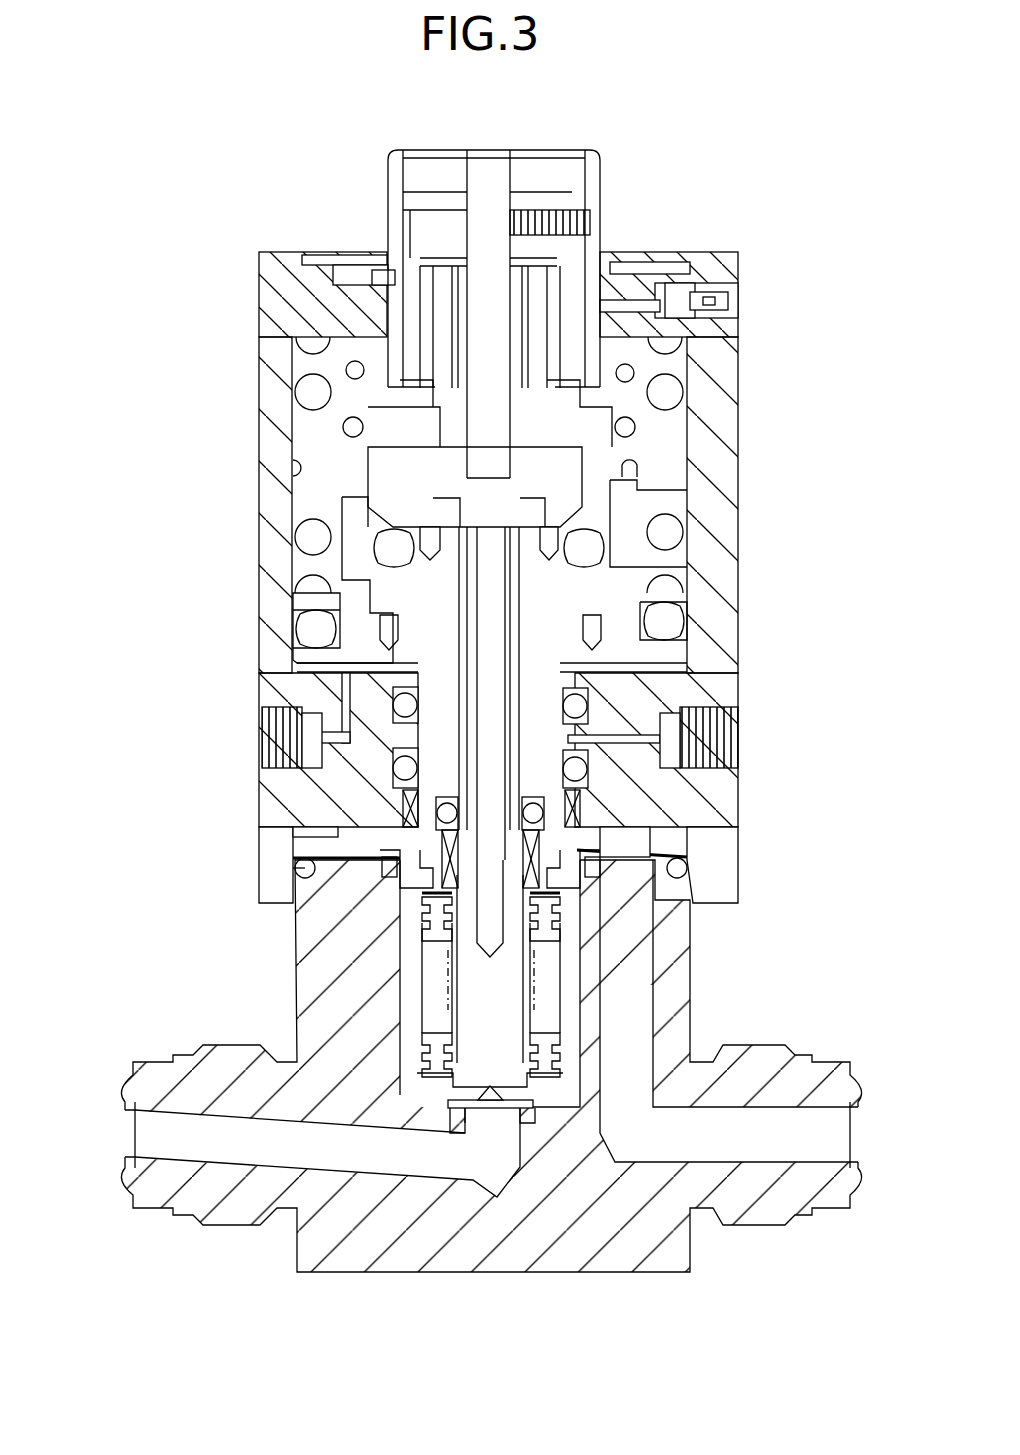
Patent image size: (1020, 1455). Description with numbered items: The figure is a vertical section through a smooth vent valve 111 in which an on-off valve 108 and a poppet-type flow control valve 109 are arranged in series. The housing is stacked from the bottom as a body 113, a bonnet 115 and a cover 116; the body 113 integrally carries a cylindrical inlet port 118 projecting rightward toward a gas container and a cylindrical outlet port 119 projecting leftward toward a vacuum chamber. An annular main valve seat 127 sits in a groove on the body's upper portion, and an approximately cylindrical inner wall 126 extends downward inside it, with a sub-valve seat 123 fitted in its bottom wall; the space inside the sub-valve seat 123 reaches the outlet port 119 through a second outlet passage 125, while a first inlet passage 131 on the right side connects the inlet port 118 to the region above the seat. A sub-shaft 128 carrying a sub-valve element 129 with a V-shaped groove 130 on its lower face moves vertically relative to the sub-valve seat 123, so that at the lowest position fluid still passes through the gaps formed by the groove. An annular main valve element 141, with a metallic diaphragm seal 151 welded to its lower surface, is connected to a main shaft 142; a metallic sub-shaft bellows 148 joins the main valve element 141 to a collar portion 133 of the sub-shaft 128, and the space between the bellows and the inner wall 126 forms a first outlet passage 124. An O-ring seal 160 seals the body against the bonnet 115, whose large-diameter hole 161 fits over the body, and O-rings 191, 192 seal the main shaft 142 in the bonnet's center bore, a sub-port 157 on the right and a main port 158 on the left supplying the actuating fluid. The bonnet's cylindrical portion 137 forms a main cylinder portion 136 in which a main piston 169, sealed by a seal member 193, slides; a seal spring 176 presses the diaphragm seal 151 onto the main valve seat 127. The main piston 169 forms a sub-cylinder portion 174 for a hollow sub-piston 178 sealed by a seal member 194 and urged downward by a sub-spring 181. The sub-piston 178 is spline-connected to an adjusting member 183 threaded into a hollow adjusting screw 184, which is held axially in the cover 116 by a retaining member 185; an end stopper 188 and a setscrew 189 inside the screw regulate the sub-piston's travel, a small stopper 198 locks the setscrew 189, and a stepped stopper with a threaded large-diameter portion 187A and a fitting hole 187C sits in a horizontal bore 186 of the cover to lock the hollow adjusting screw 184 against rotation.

The on-off valve 108 is at (615, 868).
The flow control valve 109 is at (507, 1125).
The smooth vent valve 111 is at (262, 248).
The body 113 is at (515, 1250).
The bonnet 115 is at (712, 680).
The cover 116 is at (268, 295).
The inlet port 118 is at (835, 1148).
The outlet port 119 is at (150, 1147).
The sub-valve seat 123 is at (527, 1063).
The first outlet passage 124 is at (410, 1020).
The second outlet passage 125 is at (235, 1158).
The inner wall 126 is at (440, 985).
The main valve seat 127 is at (660, 993).
The sub-shaft 128 is at (475, 975).
The sub-valve element 129 is at (440, 1100).
The V-shaped groove 130 is at (452, 1085).
The first inlet passage 131 is at (640, 1035).
The collar portion 133 is at (583, 1053).
The main cylinder portion 136 is at (300, 468).
The cylindrical portion 137 is at (270, 410).
The main valve element 141 is at (400, 815).
The main shaft 142 is at (410, 738).
The sub-shaft bellows 148 is at (592, 1050).
The diaphragm seal 151 is at (640, 848).
The sub-port 157 is at (735, 735).
The main port 158 is at (265, 730).
The O-ring seal 160 is at (295, 870).
The large-diameter hole 161 is at (682, 872).
The main piston 169 is at (665, 592).
The sub-cylinder portion 174 is at (372, 600).
The seal spring 176 is at (668, 390).
The sub-piston 178 is at (590, 488).
The sub-spring 181 is at (348, 367).
The adjusting member 183 is at (545, 290).
The hollow adjusting screw 184 is at (395, 210).
The retaining member 185 is at (395, 277).
The horizontal bore 186 is at (672, 282).
The large-diameter portion of stopper 187A is at (700, 282).
The fitting hole 187C is at (712, 300).
The end stopper 188 is at (448, 250).
The setscrew 189 is at (535, 180).
The O-ring 191 is at (583, 768).
The O-ring 192 is at (583, 708).
The seal member 193 is at (320, 630).
The seal member 194 is at (372, 533).
The small stopper 198 is at (585, 225).